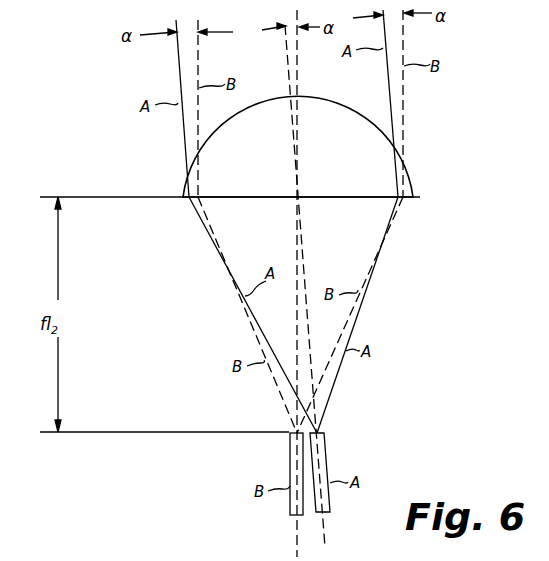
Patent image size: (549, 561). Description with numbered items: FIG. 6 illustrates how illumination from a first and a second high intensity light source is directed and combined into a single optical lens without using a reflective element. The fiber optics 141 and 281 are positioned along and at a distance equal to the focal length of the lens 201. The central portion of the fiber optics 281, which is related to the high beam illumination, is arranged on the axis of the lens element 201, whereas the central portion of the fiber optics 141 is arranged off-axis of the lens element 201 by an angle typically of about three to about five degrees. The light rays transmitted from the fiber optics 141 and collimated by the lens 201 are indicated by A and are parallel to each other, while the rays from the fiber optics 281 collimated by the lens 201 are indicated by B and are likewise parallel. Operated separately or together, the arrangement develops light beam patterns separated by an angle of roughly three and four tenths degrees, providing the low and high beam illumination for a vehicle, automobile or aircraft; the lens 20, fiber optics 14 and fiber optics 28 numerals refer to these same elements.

The lens 20 is at (298, 136).
The lens 201 is at (331, 109).
The optical fiber 14 is at (348, 472).
The fiber optics 141 is at (326, 456).
The optical fiber 28 is at (268, 474).
The fiber optics 281 is at (290, 451).